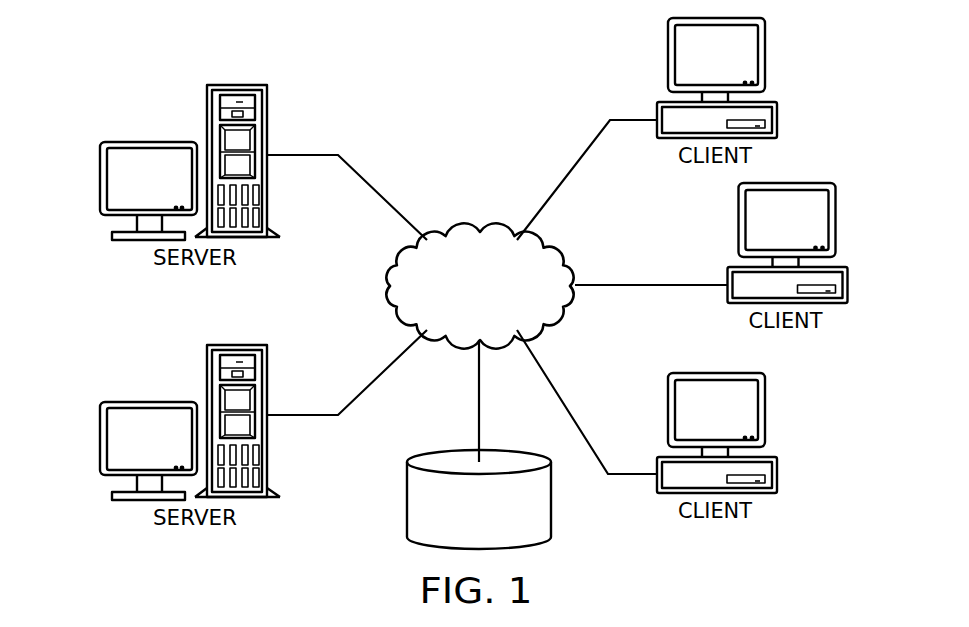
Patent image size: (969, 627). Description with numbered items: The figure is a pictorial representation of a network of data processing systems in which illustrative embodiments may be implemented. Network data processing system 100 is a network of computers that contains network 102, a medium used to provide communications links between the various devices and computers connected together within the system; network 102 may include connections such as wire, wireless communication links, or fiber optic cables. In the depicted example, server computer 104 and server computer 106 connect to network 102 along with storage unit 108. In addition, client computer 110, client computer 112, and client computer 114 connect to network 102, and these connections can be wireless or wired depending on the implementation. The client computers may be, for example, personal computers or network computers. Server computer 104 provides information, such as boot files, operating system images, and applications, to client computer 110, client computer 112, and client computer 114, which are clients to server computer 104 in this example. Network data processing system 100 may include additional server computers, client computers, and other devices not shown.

The network data processing system 100 is at (340, 60).
The network 102 is at (455, 232).
The server computer 104 is at (100, 180).
The server computer 106 is at (101, 437).
The storage unit 108 is at (407, 500).
The client computer 110 is at (777, 108).
The client computer 112 is at (847, 293).
The client computer 114 is at (777, 485).